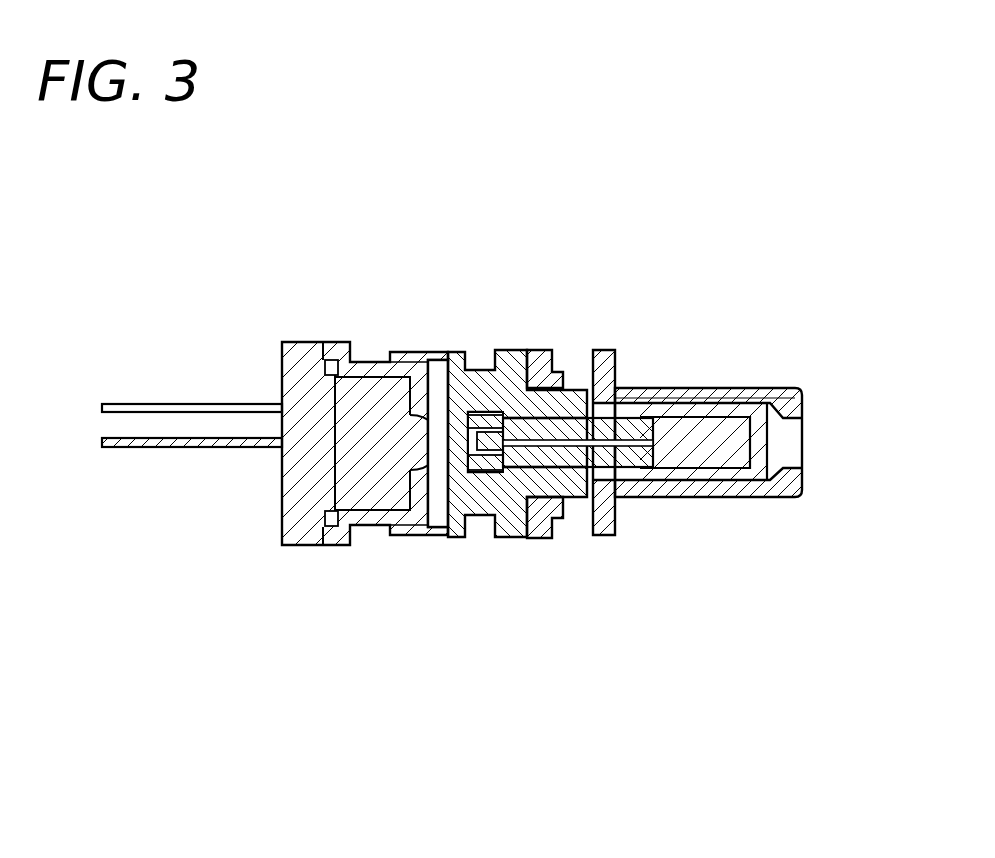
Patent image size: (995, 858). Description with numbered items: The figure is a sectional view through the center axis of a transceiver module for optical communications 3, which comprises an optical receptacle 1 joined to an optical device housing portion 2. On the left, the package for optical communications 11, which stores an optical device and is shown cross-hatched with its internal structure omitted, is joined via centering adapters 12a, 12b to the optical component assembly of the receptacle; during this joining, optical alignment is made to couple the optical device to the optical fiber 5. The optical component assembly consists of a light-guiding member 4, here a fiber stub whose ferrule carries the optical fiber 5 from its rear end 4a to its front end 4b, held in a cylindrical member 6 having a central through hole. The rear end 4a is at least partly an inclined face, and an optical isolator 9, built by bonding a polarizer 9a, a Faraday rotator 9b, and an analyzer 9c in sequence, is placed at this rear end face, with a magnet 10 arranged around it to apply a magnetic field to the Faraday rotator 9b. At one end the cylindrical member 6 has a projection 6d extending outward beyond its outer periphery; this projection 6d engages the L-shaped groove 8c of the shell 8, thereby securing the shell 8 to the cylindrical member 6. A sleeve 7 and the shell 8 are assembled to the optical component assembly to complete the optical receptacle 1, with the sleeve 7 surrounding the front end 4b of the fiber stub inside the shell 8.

The optical receptacle 1 is at (792, 703).
The optical device housing portion 2 is at (472, 703).
The transceiver module for optical communications 3 is at (640, 142).
The light-guiding member 4 is at (593, 497).
The rear end 4a is at (474, 500).
The front end 4b is at (670, 388).
The optical fiber 5 is at (638, 467).
The cylindrical member 6 is at (520, 515).
The projection 6d is at (558, 372).
The sleeve 7 is at (687, 470).
The shell 8 is at (745, 495).
The groove 8c is at (584, 385).
The optical isolator 9 is at (530, 270).
The polarizer 9a is at (478, 424).
The Faraday rotator 9b is at (490, 437).
The analyzer 9c is at (501, 447).
The magnet 10 is at (456, 495).
The package for optical communications 11 is at (317, 425).
The centering adapter 12a is at (365, 362).
The centering adapter 12b is at (410, 352).